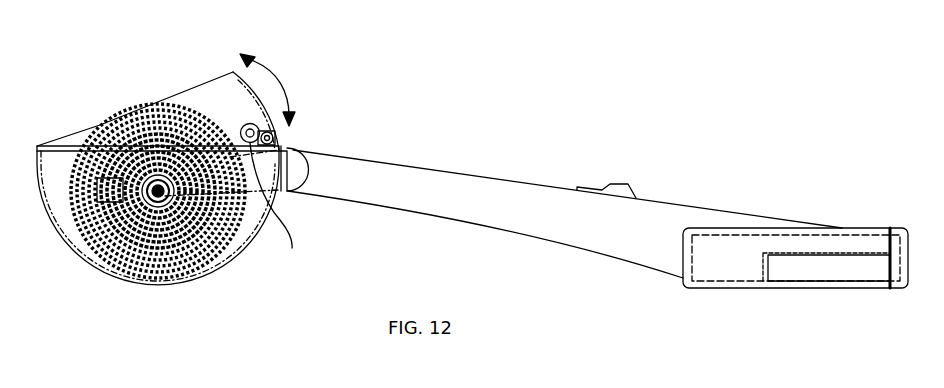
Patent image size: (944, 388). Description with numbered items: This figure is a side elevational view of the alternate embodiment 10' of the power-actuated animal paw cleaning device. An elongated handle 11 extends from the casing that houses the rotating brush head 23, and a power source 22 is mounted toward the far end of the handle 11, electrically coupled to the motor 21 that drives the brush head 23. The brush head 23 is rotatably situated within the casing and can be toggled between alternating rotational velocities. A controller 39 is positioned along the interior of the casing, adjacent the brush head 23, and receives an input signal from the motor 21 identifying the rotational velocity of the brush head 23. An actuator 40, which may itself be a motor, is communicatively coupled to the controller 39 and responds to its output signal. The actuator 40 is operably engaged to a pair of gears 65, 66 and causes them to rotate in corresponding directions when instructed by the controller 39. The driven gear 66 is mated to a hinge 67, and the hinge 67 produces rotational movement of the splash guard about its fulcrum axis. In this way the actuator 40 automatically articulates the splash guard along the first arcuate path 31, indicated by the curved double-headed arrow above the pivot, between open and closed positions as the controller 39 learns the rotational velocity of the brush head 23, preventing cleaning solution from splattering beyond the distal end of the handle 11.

The alternate embodiment 10' is at (454, 63).
The elongated handle 11 is at (470, 192).
The motor 21 is at (105, 190).
The power source 22 is at (851, 262).
The brush head 23 is at (172, 257).
The first arcuate path 31 is at (270, 80).
The controller 39 is at (268, 128).
The actuator 40 is at (242, 130).
The gear 65 is at (278, 207).
The driven gear 66 is at (275, 136).
The hinge 67 is at (288, 190).